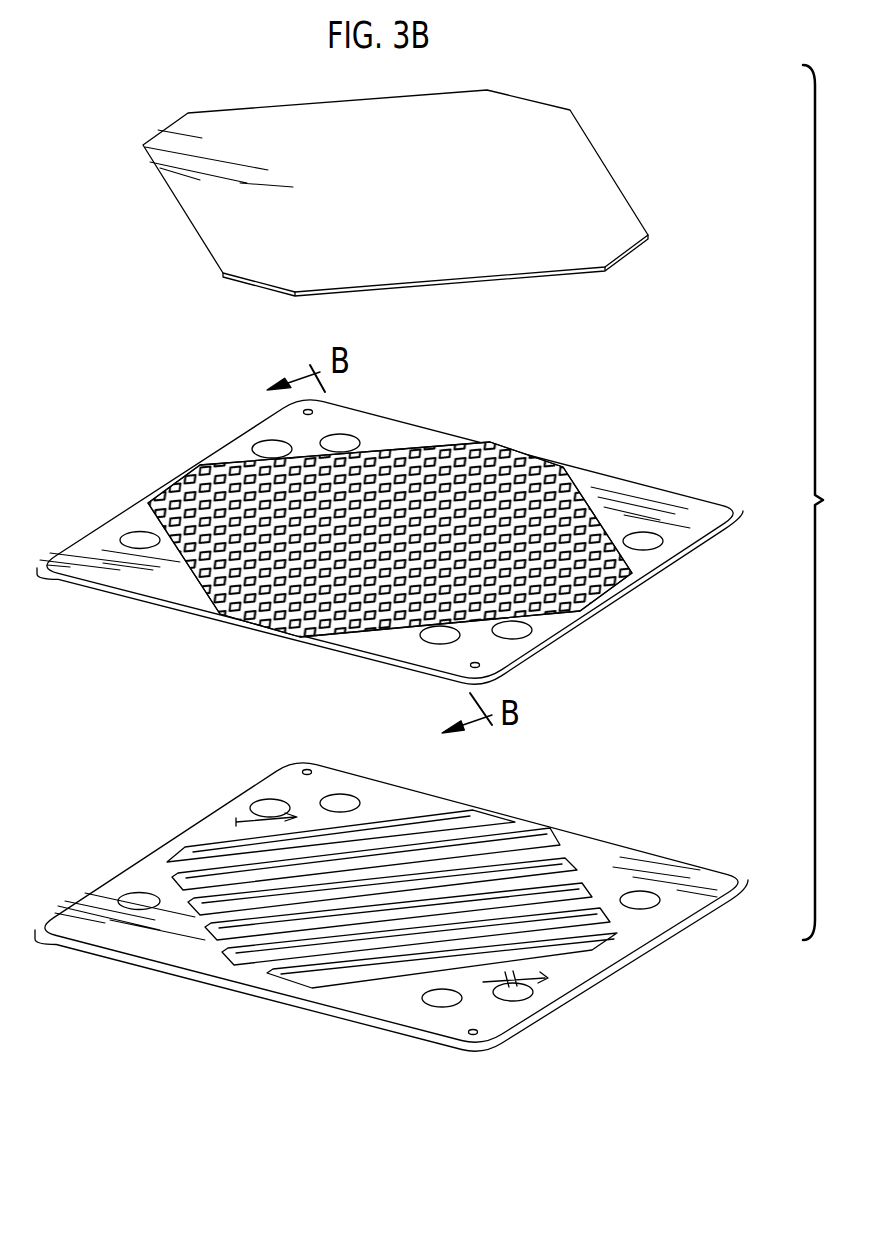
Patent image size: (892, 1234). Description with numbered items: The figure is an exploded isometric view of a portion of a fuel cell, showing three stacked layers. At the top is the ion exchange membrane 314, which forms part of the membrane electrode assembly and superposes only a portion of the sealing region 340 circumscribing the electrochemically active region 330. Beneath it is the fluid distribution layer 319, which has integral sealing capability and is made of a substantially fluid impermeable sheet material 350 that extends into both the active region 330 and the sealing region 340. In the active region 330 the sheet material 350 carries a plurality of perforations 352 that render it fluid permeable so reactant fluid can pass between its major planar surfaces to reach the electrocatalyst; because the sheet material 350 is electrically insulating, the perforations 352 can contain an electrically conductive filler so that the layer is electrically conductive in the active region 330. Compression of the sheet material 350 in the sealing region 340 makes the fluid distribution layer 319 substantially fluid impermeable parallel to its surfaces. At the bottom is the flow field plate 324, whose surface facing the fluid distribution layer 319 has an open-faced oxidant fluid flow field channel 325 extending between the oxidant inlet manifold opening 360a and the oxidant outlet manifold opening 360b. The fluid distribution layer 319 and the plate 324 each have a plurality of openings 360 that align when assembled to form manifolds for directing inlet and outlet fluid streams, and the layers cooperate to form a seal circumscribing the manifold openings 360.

The ion exchange membrane 314 is at (603, 197).
The fluid distribution layer 319 is at (403, 529).
The flow field plate 324 is at (647, 857).
The oxidant fluid flow field channel 325 is at (560, 837).
The electrochemically active region 330 is at (390, 504).
The sealing region 340 is at (697, 533).
The substantially fluid impermeable sheet material 350 is at (645, 543).
The perforations 352 is at (450, 470).
The openings 360 is at (140, 540).
The oxidant inlet manifold opening 360a is at (267, 808).
The oxidant outlet manifold opening 360b is at (527, 994).